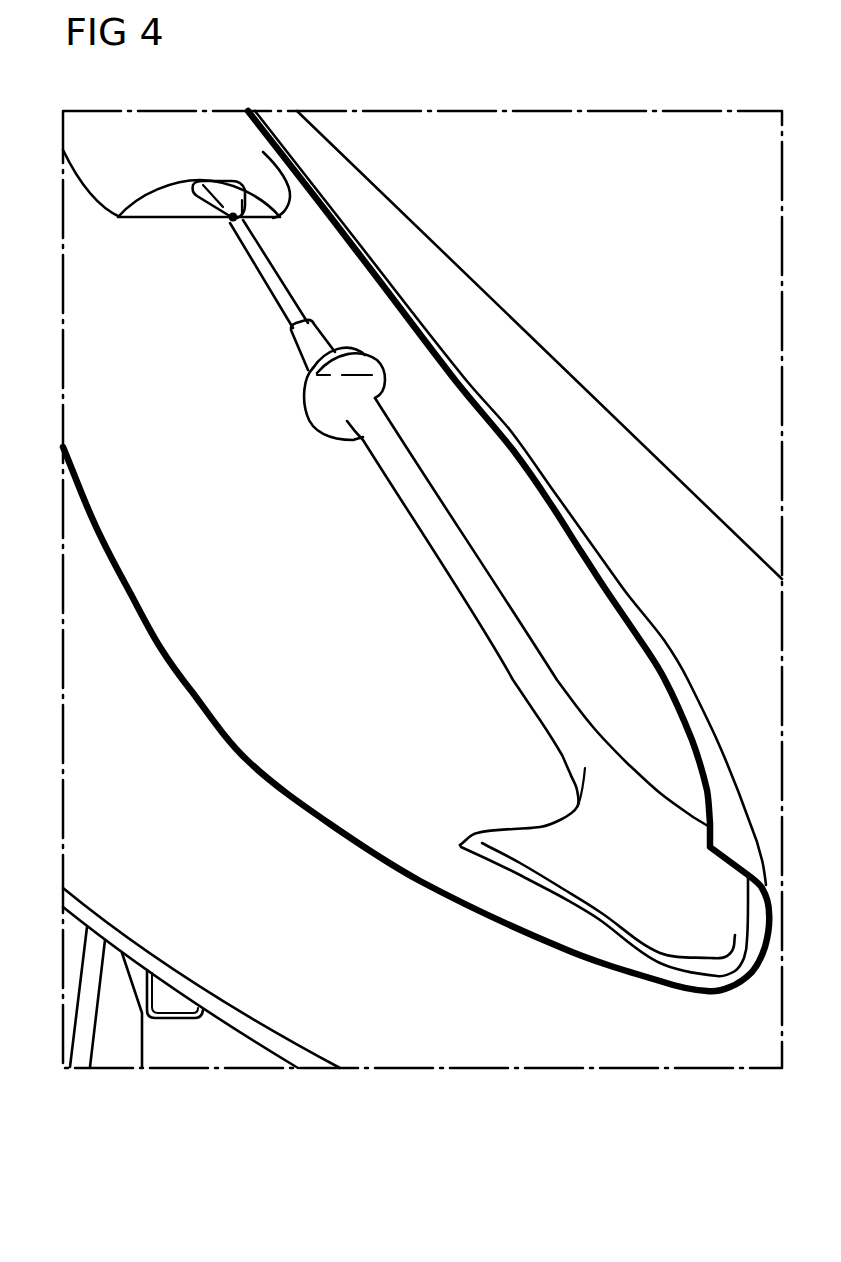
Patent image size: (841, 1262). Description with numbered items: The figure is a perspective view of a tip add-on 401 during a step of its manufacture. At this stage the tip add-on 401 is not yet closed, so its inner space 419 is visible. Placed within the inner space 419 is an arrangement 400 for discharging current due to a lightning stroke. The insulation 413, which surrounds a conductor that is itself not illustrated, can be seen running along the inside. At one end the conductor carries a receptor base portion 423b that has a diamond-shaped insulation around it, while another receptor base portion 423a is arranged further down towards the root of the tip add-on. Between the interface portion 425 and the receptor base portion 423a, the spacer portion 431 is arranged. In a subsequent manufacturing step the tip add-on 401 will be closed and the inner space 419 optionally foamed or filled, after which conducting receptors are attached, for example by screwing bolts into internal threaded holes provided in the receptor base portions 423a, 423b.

The arrangement for discharging current 400 is at (378, 530).
The tip add-on 401 is at (283, 1015).
The insulation 413 is at (372, 462).
The inner space 419 is at (227, 683).
The receptor base portion 423a is at (303, 421).
The receptor base portion 423b is at (580, 925).
The interface portion 425 is at (152, 225).
The spacer portion 431 is at (250, 260).